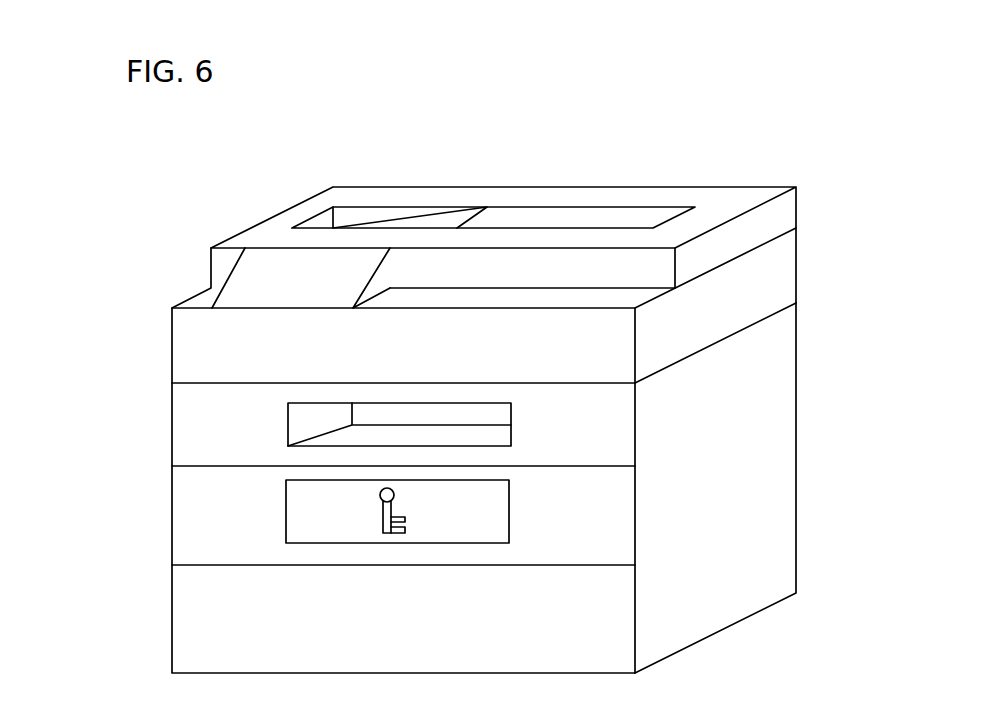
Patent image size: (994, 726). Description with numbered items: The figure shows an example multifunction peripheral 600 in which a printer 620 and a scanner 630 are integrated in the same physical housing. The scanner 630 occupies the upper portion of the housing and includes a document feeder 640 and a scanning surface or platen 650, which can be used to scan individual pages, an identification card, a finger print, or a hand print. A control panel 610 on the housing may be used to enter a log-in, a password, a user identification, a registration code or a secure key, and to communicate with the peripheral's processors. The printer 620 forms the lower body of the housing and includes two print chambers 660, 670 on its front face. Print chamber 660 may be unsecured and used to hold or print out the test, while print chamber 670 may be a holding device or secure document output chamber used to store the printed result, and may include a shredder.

The multifunction peripheral 600 is at (128, 248).
The control panel 610 is at (268, 262).
The printer 620 is at (734, 446).
The scanner 630 is at (735, 203).
The document feeder 640 is at (392, 212).
The scanning surface or platen 650 is at (566, 215).
The print chamber 660 is at (268, 425).
The print chamber 670 is at (268, 507).